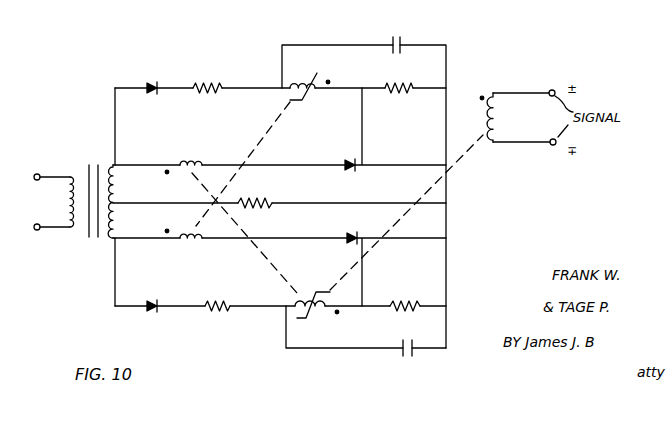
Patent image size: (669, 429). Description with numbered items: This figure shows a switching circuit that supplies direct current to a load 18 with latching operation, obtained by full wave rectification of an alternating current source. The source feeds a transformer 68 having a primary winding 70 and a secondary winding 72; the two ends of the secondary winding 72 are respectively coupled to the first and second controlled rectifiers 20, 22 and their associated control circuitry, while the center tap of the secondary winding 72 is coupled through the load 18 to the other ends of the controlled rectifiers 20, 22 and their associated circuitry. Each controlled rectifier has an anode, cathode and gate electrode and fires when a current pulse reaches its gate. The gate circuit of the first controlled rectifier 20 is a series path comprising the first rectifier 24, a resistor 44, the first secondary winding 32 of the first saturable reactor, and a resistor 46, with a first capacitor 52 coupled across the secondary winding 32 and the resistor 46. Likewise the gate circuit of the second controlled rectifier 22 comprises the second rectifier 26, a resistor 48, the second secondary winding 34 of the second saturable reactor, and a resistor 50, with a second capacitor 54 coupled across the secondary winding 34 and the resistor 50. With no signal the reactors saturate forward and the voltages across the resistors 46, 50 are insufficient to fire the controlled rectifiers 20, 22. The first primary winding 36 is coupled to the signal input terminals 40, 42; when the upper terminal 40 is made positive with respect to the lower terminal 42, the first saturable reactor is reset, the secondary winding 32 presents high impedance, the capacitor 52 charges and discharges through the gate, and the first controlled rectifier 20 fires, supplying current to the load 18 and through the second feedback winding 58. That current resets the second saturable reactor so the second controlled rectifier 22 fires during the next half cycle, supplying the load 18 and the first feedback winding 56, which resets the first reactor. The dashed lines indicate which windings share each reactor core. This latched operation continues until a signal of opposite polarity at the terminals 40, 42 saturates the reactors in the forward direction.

The load 18 is at (271, 201).
The first controlled rectifier 20 is at (350, 232).
The second controlled rectifier 22 is at (352, 160).
The first rectifier 24 is at (151, 311).
The second rectifier 26 is at (150, 85).
The first secondary winding 32 is at (312, 300).
The second secondary winding 34 is at (316, 75).
The first primary winding 36 is at (497, 100).
The upper input terminal 40 is at (552, 90).
The lower input terminal 42 is at (552, 146).
The resistor 44 is at (213, 312).
The resistor 46 is at (401, 298).
The resistor 48 is at (207, 83).
The resistor 50 is at (397, 95).
The first capacitor 52 is at (409, 355).
The second capacitor 54 is at (390, 40).
The first feedback winding 56 is at (189, 160).
The second feedback winding 58 is at (189, 245).
The transformer 68 is at (100, 152).
The primary winding 70 is at (68, 190).
The secondary winding 72 is at (119, 184).